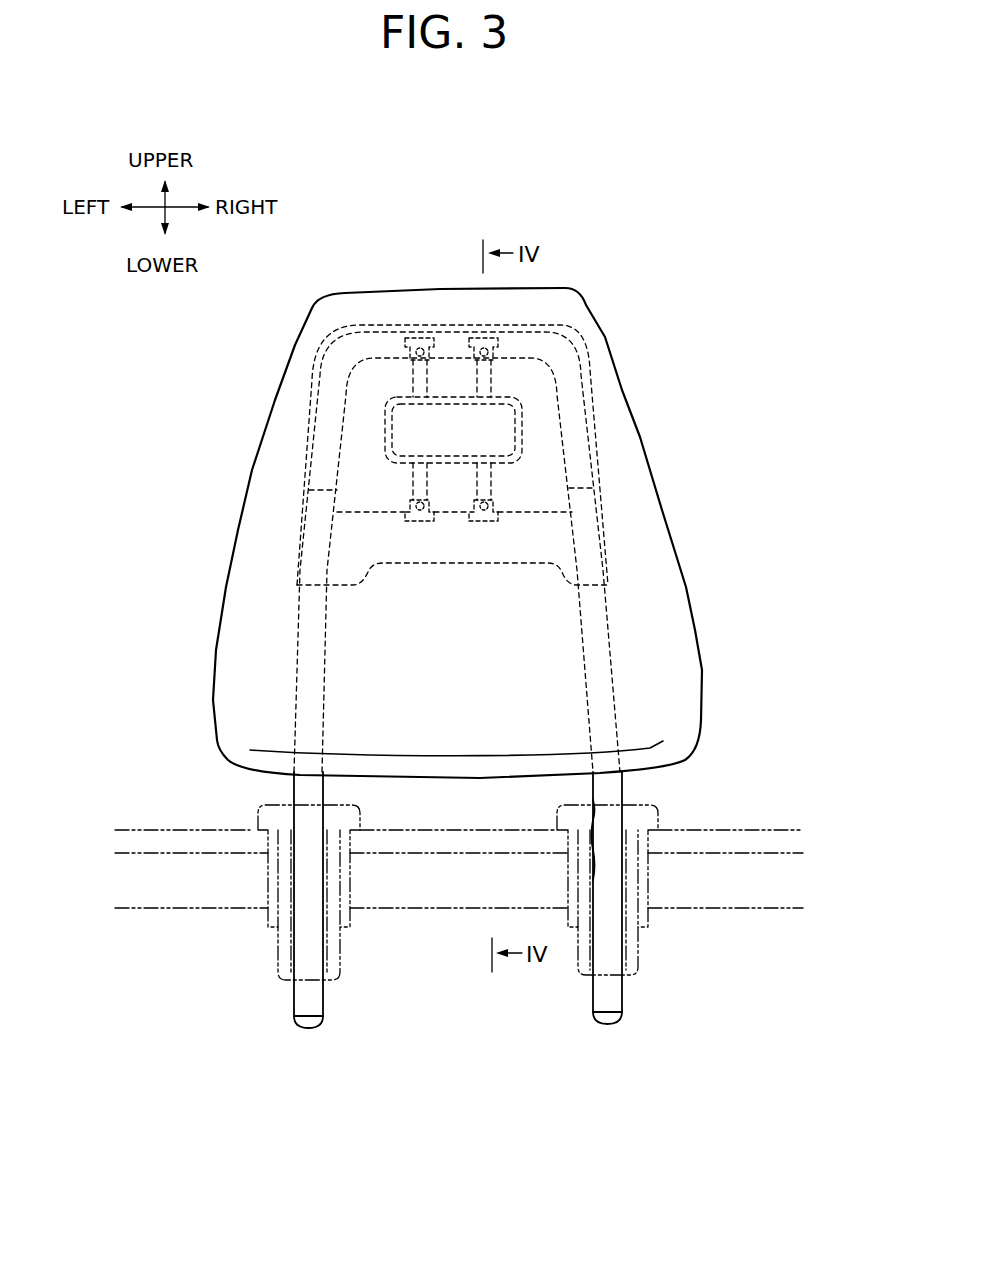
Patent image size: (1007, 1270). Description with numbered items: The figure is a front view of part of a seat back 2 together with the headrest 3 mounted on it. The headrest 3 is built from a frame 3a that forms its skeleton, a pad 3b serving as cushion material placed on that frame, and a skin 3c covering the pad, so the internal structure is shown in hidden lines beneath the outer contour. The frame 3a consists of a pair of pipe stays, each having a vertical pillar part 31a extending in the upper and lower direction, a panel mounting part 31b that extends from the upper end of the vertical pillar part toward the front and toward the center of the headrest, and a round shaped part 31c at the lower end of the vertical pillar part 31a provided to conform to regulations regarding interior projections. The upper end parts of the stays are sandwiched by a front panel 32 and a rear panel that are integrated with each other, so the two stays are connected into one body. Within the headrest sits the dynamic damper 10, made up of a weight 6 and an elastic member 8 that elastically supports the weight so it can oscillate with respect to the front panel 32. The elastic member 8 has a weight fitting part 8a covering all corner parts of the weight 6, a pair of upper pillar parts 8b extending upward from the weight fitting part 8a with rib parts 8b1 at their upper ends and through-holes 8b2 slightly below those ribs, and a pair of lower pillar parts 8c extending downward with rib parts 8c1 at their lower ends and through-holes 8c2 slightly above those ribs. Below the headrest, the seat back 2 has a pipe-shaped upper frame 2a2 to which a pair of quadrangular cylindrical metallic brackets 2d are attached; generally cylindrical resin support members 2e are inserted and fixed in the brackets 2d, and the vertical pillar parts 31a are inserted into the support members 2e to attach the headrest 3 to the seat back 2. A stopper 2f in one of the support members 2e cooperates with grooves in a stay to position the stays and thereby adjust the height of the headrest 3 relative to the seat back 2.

The seat back 2 is at (139, 829).
The upper frame 2a2 is at (210, 900).
The bracket 2d is at (346, 915).
The support member 2e is at (333, 958).
The stopper 2f is at (580, 842).
The headrest 3 is at (296, 350).
The frame 3a is at (593, 394).
The pad 3b is at (262, 546).
The skin 3c is at (224, 587).
The vertical pillar part 31a is at (293, 792).
The panel mounting part 31b is at (305, 637).
The round shaped part 31c is at (310, 1027).
The front panel 32 is at (580, 466).
The dynamic damper 10 is at (521, 401).
The weight 6 is at (497, 428).
The elastic member 8 is at (180, 386).
The weight fitting part 8a is at (382, 432).
The upper pillar part 8b is at (413, 380).
The rib part 8b1 is at (408, 338).
The through-hole 8b2 is at (483, 338).
The lower pillar part 8c is at (413, 482).
The rib part 8c1 is at (492, 517).
The through-hole 8c2 is at (419, 522).